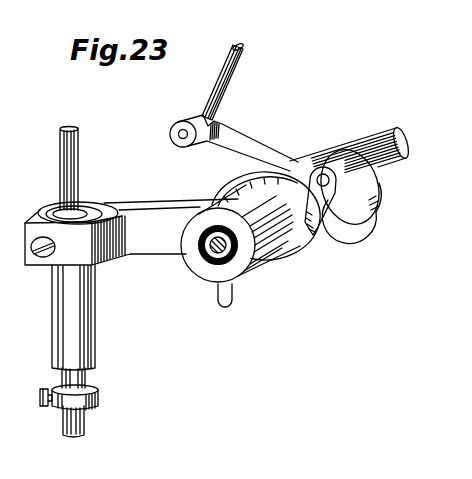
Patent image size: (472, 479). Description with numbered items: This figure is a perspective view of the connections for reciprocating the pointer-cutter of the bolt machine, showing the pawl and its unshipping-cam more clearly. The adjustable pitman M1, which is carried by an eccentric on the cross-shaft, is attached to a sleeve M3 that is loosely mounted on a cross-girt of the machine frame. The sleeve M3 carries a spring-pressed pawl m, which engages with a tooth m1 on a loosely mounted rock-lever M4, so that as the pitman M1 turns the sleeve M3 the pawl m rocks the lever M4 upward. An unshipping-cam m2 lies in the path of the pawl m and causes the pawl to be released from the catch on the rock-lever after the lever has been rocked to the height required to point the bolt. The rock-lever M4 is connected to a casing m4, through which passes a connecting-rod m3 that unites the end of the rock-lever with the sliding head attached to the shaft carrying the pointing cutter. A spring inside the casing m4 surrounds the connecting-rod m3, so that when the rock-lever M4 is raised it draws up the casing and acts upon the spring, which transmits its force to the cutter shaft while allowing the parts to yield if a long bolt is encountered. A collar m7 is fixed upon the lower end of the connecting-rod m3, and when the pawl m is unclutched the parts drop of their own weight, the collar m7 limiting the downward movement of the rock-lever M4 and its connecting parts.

The adjustable pitman M1 is at (231, 76).
The sleeve M3 is at (392, 128).
The rock-lever M4 is at (131, 232).
The spring-pressed pawl m is at (328, 240).
The tooth m1 is at (300, 229).
The unshipping-cam m2 is at (353, 219).
The connecting-rod m3 is at (78, 178).
The casing m4 is at (95, 302).
The collar m7 is at (92, 391).